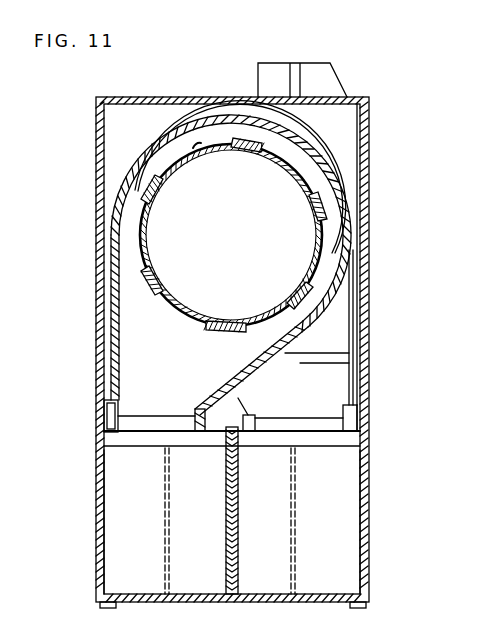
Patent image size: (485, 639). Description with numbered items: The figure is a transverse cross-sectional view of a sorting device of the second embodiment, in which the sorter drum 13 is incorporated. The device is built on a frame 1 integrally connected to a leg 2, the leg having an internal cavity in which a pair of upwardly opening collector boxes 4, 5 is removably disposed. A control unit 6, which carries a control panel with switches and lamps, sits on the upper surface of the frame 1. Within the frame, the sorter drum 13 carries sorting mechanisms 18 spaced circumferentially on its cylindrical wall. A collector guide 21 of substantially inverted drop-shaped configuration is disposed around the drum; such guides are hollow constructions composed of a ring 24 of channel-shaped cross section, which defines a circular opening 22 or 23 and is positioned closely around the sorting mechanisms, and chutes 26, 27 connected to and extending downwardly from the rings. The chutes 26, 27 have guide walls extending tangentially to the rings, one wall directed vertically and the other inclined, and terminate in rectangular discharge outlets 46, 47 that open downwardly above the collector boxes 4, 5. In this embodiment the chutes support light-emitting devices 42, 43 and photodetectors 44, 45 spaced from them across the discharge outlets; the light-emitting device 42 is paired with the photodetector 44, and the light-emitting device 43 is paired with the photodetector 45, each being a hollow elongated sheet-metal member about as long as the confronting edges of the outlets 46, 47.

The frame 1 is at (184, 99).
The leg 2 is at (360, 424).
The collector box 4 is at (355, 493).
The collector box 5 is at (108, 498).
The control unit 6 is at (317, 66).
The sorter drum 13 is at (320, 241).
The sorting mechanism 18 is at (238, 151).
The collector guide 21 is at (356, 303).
The circular opening 22 is at (200, 152).
The circular opening 23 is at (322, 162).
The ring 24 is at (158, 145).
The chute 26 is at (161, 414).
The chute 27 is at (340, 356).
The light-emitting device 42 is at (204, 434).
The light-emitting device 43 is at (252, 434).
The photodetector 44 is at (127, 405).
The photodetector 45 is at (344, 410).
The discharge outlet 46 is at (168, 441).
The discharge outlet 47 is at (323, 441).